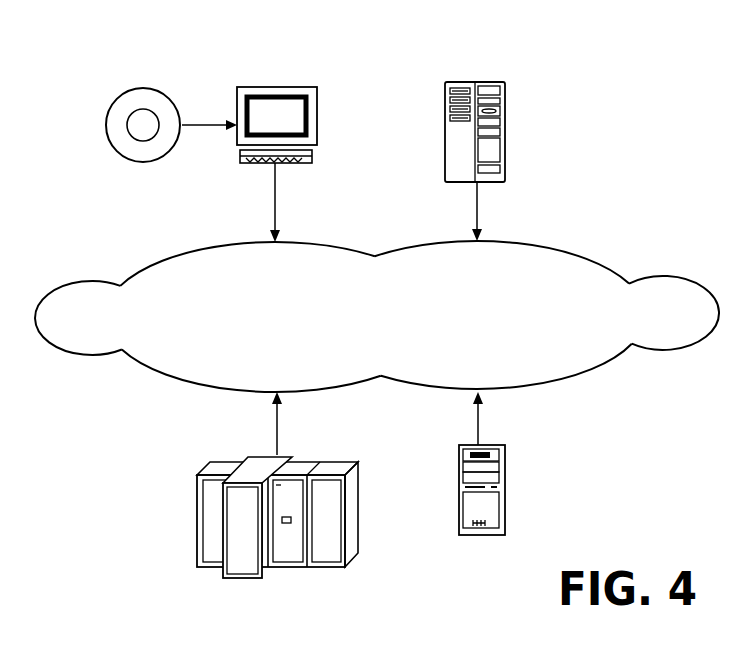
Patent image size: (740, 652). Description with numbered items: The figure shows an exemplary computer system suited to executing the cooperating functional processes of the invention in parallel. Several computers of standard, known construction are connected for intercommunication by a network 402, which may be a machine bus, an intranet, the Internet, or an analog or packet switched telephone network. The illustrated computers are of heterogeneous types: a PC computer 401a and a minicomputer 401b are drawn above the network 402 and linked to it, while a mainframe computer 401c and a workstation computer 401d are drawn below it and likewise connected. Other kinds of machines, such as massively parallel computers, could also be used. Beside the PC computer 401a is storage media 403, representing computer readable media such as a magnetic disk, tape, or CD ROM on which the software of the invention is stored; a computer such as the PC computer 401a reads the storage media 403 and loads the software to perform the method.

The PC computer 401a is at (240, 85).
The minicomputer 401b is at (444, 80).
The mainframe computer 401c is at (197, 565).
The workstation computer 401d is at (456, 540).
The network 402 is at (63, 347).
The storage media 403 is at (110, 150).